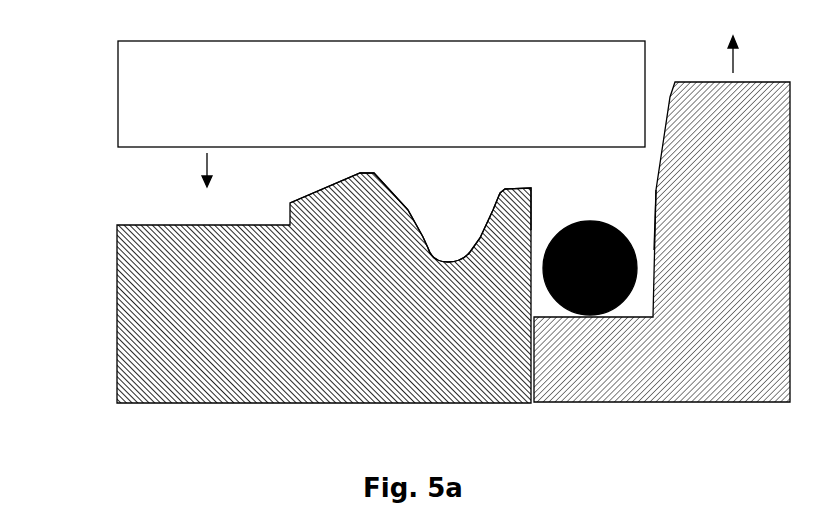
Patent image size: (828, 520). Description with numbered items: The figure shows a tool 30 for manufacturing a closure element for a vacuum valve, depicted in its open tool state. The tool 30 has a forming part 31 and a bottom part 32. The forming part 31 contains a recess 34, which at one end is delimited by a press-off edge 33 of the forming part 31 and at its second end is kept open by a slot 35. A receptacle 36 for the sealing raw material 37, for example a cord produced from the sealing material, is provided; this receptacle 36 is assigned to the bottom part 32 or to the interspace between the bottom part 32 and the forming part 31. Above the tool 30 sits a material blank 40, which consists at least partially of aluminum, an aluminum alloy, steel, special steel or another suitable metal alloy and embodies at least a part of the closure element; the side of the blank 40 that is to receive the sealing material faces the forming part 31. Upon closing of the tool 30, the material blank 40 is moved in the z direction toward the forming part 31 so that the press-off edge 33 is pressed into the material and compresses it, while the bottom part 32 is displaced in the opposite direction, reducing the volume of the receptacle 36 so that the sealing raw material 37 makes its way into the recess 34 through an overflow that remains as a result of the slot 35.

The tool 30 is at (98, 171).
The forming part 31 is at (213, 392).
The bottom part 32 is at (653, 378).
The press-off edge 33 is at (380, 174).
The recess 34 is at (466, 232).
The slot 35 is at (518, 179).
The receptacle 36 is at (593, 179).
The sealing raw material 37 is at (590, 221).
The material blank 40 is at (400, 113).